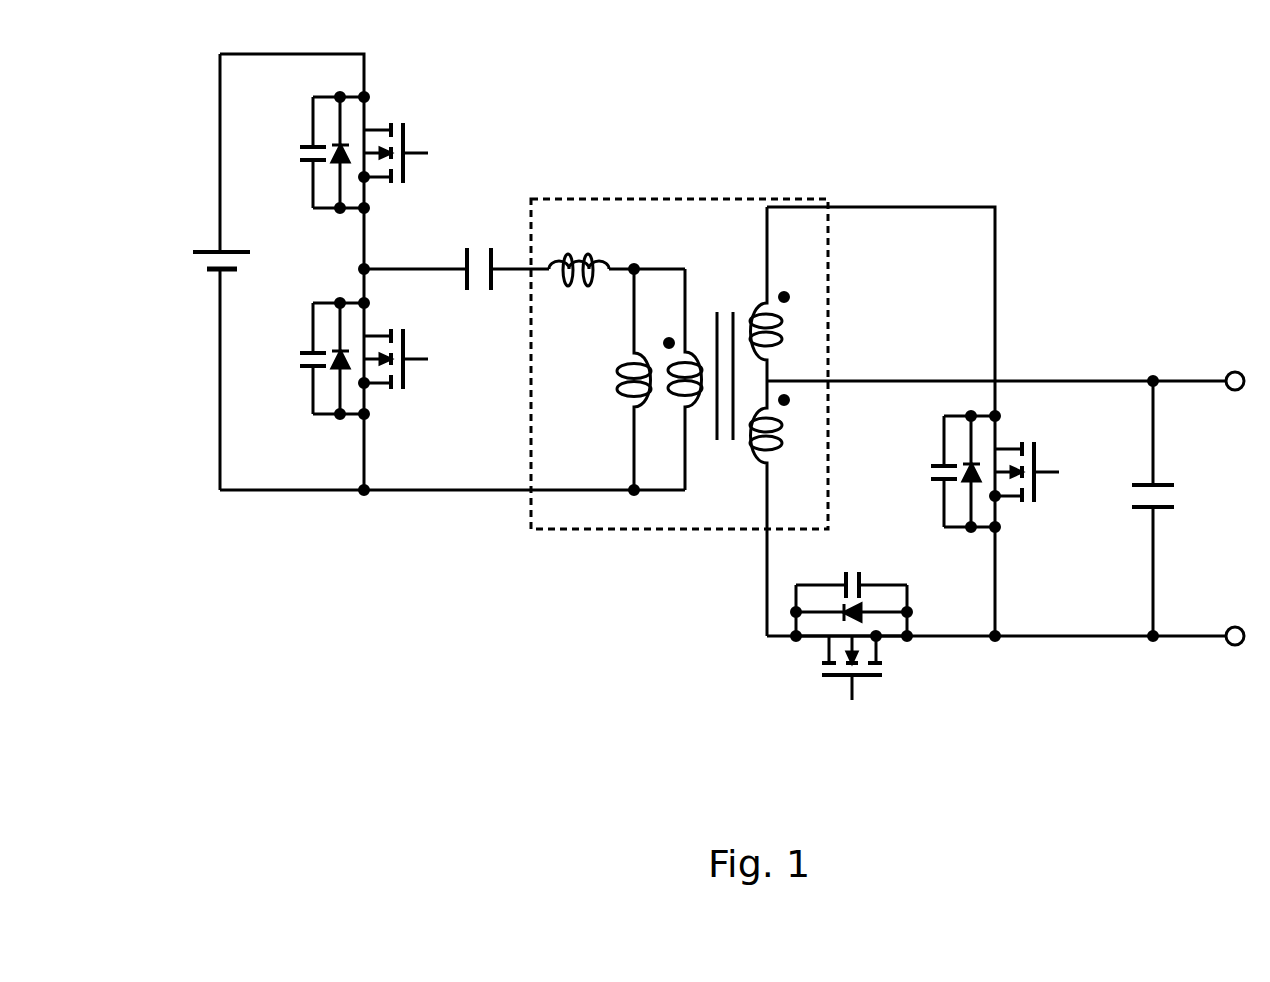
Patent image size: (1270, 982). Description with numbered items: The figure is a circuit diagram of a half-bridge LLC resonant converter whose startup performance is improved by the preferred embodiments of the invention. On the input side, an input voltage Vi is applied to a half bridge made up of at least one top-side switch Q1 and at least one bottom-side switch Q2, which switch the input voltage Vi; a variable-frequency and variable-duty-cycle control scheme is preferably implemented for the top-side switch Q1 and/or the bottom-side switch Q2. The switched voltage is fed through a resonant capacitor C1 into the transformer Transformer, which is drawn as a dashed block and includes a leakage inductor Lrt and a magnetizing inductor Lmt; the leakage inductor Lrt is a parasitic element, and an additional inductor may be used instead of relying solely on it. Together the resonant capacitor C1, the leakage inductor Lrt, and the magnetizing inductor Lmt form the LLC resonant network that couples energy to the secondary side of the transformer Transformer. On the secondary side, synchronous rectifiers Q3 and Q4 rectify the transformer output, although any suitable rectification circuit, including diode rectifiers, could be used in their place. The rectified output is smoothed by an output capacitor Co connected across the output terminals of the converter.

The input voltage Vi is at (200, 272).
The top-side switch Q1 is at (366, 165).
The bottom-side switch Q2 is at (364, 378).
The resonant capacitor C1 is at (478, 252).
The leakage inductor Lrt is at (579, 250).
The magnetizing inductor Lmt is at (611, 379).
The transformer Transformer is at (679, 395).
The synchronous rectifier Q3 is at (865, 646).
The synchronous rectifier Q4 is at (995, 488).
The output capacitor Co is at (1171, 508).